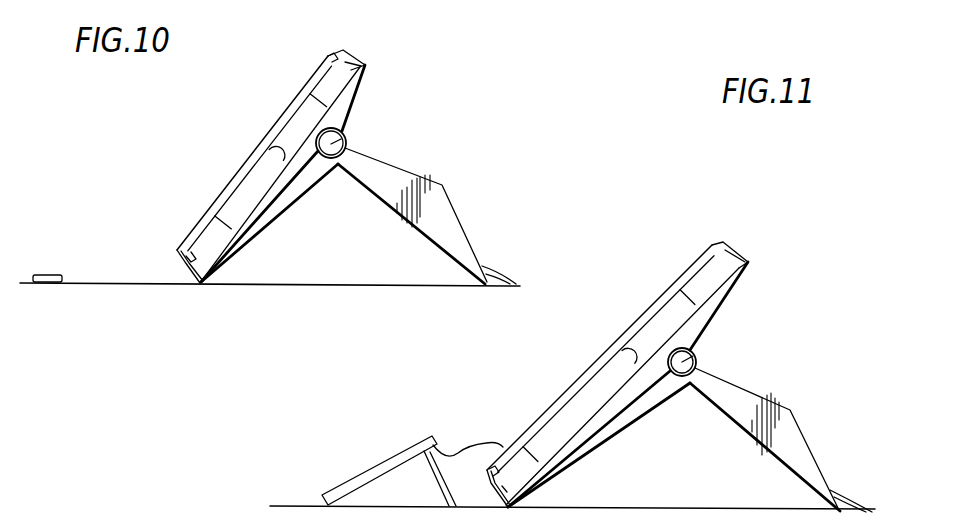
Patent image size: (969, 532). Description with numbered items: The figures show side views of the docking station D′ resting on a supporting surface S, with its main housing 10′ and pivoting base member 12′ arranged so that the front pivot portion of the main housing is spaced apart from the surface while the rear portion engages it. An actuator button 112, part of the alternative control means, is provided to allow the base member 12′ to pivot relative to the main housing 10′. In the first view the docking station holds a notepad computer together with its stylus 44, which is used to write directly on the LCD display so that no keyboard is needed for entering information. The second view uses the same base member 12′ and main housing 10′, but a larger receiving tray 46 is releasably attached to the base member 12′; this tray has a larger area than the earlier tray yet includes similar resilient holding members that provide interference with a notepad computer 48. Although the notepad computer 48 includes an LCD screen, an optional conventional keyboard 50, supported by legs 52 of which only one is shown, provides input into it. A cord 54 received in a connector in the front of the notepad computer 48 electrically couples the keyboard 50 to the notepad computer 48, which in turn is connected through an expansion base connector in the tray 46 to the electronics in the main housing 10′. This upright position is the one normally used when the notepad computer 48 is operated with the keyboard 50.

In FIG. 10, the main housing 10′ is at (448, 227).
In FIG. 11, the main housing 10′ is at (793, 446).
In FIG. 10, the base member 12′ is at (271, 166).
In FIG. 11, the base member 12′ is at (653, 385).
In FIG. 10, the stylus 44 is at (53, 274).
In FIG. 11, the receiving tray 46 is at (741, 252).
In FIG. 11, the notepad computer 48 is at (657, 306).
In FIG. 11, the keyboard 50 is at (391, 457).
In FIG. 11, the legs 52 is at (431, 481).
In FIG. 11, the cord 54 is at (483, 443).
In FIG. 10, the actuator button 112 is at (344, 137).
In FIG. 11, the actuator button 112 is at (697, 360).
In FIG. 10, the support surface S is at (347, 282).
In FIG. 11, the support surface S is at (659, 508).
In FIG. 10, the docking station D′ is at (446, 153).
In FIG. 11, the docking station D′ is at (788, 321).